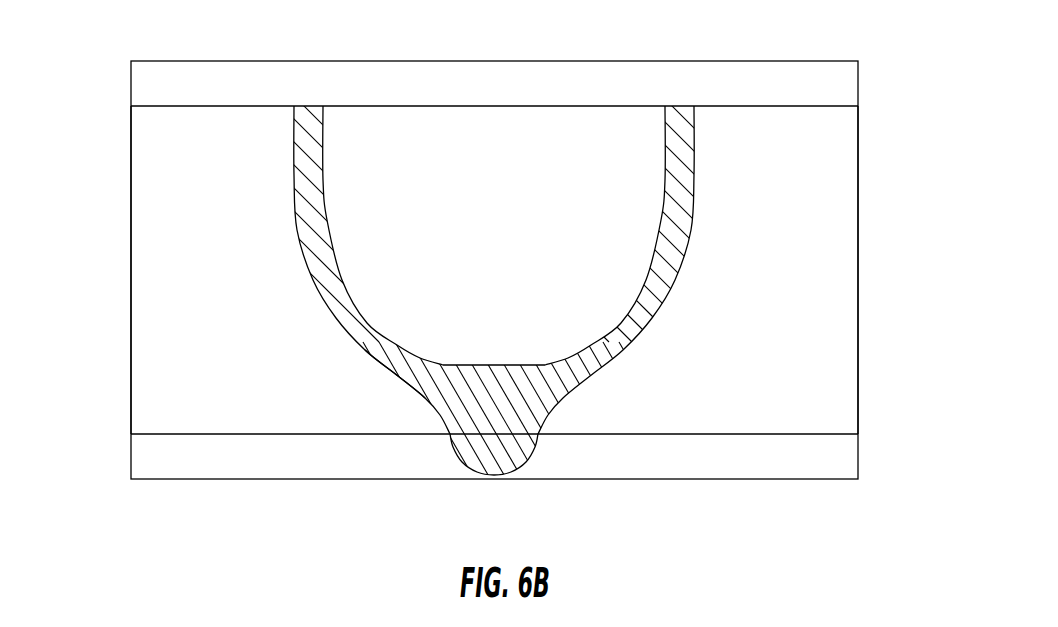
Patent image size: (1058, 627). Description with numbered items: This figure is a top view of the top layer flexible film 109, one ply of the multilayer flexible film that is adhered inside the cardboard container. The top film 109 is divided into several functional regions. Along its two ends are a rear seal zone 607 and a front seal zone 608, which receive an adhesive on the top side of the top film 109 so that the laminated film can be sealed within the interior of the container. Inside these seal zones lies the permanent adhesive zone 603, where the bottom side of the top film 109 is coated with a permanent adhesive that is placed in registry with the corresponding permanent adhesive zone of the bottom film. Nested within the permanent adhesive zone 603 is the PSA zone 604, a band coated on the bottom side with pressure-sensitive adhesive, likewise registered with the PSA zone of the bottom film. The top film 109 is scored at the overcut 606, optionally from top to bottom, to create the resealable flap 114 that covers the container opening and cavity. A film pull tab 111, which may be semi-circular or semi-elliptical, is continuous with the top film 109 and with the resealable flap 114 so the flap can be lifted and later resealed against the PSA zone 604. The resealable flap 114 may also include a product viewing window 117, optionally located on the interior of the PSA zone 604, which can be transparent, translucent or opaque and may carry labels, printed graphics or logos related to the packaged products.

The top layer flexible film 109 is at (875, 64).
The rear seal zone 607 is at (157, 81).
The front seal zone 608 is at (157, 453).
The permanent adhesive zone 603 is at (823, 390).
The product viewing window 117 is at (627, 188).
The PSA zone 604 is at (657, 300).
The overcut 606 is at (553, 405).
The film pull tab 111 is at (533, 440).
The resealable flap 114 is at (380, 378).